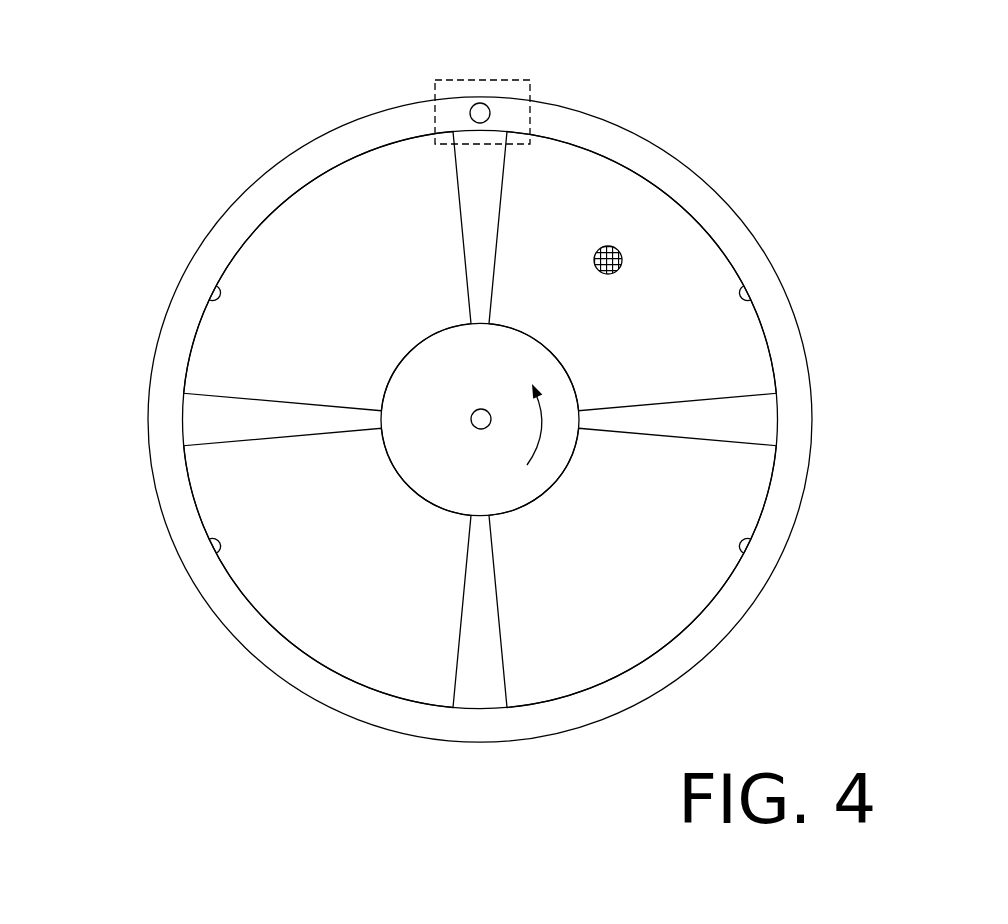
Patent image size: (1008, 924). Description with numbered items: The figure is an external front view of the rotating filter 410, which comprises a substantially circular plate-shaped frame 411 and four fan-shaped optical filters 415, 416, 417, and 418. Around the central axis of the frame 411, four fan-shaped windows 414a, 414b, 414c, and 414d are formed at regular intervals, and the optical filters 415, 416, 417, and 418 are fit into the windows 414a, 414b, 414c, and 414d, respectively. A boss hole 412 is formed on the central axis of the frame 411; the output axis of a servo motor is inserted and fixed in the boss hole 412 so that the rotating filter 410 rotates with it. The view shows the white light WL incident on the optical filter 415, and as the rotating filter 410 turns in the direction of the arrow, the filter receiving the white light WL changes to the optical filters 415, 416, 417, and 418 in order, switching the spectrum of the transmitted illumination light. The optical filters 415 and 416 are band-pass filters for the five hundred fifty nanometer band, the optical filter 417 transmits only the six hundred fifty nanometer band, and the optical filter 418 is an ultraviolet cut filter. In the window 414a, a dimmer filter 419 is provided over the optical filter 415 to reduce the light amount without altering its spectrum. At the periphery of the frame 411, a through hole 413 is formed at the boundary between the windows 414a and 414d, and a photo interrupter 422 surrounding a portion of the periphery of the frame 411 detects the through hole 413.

The rotating filter 410 is at (800, 85).
The frame 411 is at (746, 233).
The boss hole 412 is at (472, 410).
The through hole 413 is at (491, 113).
The window 414a is at (745, 296).
The window 414b is at (745, 541).
The window 414c is at (216, 541).
The window 414d is at (215, 296).
The optical filter 415 is at (632, 250).
The optical filter 416 is at (610, 660).
The optical filter 417 is at (352, 660).
The optical filter 418 is at (352, 180).
The dimmer filter 419 is at (610, 178).
The photo interrupter 422 is at (472, 80).
The white light WL is at (620, 271).